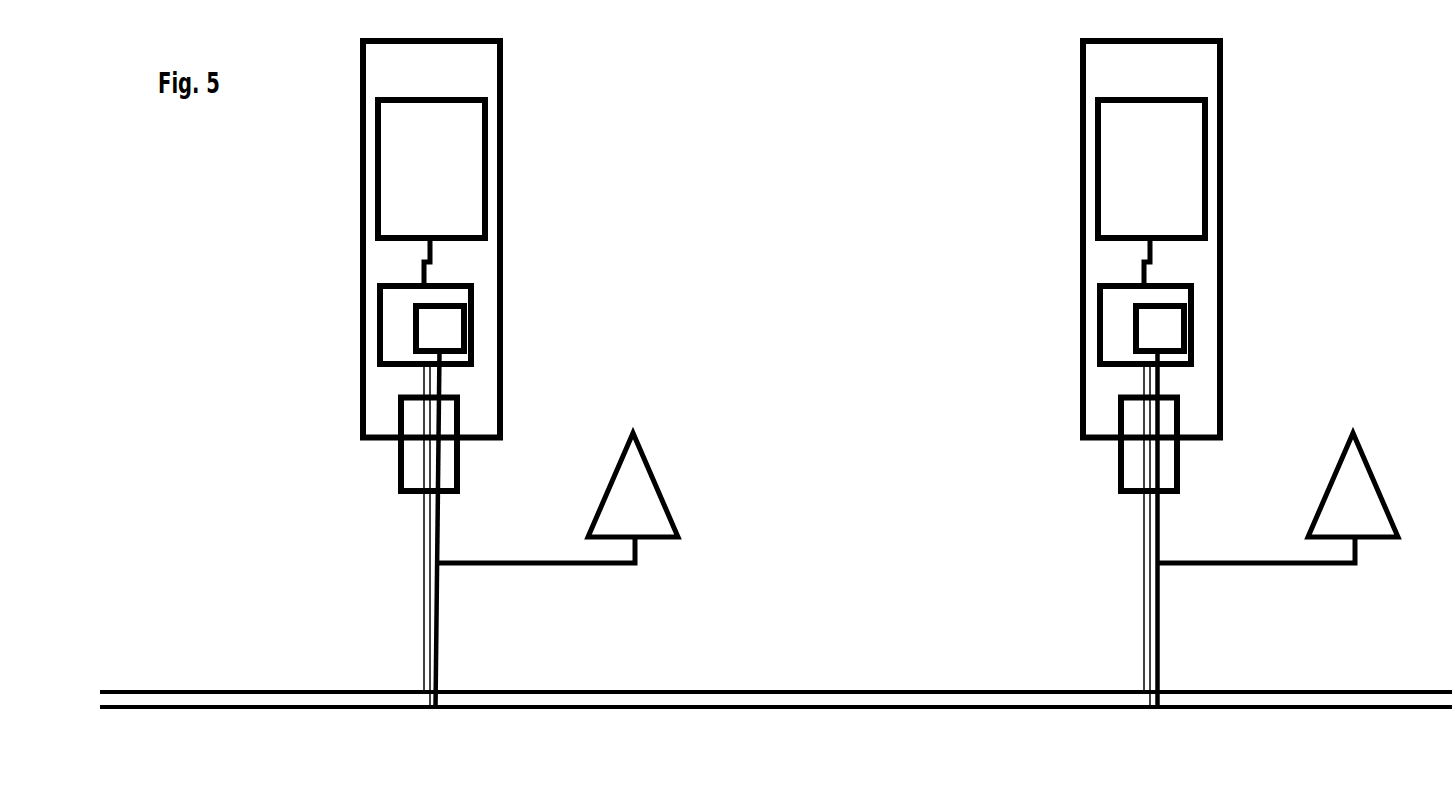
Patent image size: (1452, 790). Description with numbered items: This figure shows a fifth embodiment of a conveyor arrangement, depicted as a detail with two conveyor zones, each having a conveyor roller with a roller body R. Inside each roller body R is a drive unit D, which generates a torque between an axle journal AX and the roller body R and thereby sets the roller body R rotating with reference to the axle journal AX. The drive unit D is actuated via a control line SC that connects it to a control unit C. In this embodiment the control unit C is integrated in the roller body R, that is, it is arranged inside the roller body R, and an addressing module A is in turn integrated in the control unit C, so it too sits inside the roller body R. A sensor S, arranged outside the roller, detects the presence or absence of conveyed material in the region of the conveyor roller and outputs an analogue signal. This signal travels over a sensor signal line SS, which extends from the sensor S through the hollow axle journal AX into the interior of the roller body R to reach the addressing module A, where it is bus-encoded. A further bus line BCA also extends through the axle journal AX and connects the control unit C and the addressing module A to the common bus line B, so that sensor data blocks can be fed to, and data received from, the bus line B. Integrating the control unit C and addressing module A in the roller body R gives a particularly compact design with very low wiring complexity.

The roller body R is at (501, 237).
The drive unit D is at (791, 169).
The control line SC is at (423, 274).
The control unit C is at (785, 325).
The addressing module A is at (800, 328).
The axle journal AX is at (458, 479).
The sensor S is at (993, 485).
The sensor signal line SS is at (588, 563).
The bus line BCA is at (432, 606).
The bus line B is at (688, 692).